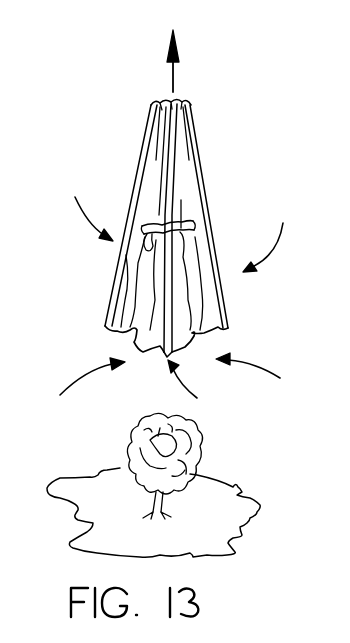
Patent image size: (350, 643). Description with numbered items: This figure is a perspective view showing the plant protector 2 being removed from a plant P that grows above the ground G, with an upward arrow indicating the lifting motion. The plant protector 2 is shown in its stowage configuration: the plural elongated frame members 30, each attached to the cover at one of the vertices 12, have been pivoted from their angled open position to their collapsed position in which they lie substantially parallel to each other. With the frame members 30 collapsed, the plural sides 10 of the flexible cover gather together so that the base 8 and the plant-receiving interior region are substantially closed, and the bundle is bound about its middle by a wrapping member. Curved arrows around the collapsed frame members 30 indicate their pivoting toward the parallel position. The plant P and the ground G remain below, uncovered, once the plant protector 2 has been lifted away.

The plant protector 2 is at (131, 121).
The sides 10 is at (158, 162).
The vertices 12 is at (172, 147).
The frame members 30 is at (113, 330).
The base 8 is at (147, 355).
The plant P is at (188, 438).
The ground G is at (222, 495).